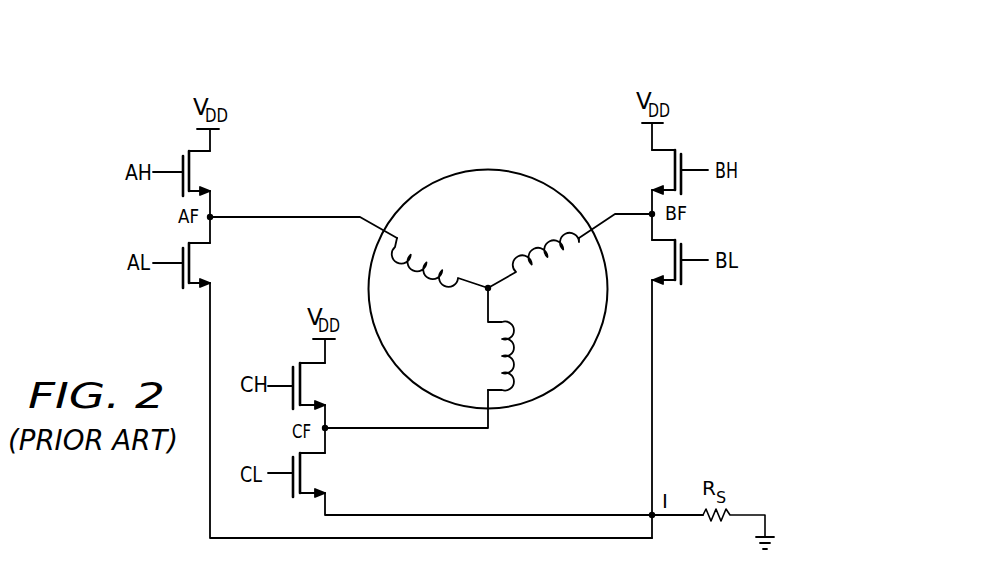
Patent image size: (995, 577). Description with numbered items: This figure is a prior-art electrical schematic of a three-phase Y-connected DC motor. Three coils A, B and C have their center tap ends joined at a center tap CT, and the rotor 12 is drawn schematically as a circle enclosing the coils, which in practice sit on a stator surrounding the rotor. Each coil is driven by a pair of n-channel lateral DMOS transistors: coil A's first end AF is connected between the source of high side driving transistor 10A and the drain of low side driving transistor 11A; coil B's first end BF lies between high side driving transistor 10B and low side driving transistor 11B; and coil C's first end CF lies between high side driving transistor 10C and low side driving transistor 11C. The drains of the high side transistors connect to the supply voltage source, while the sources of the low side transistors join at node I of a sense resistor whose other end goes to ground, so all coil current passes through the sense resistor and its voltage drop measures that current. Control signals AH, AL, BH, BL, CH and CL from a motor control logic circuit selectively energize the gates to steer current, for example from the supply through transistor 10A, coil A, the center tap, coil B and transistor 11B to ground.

The high side driving transistor 10A is at (182, 162).
The low side driving transistor 11A is at (182, 273).
The high side driving transistor 10B is at (683, 160).
The low side driving transistor 11B is at (683, 272).
The high side driving transistor 10C is at (293, 372).
The low side driving transistor 11C is at (293, 487).
The rotor 12 is at (488, 170).